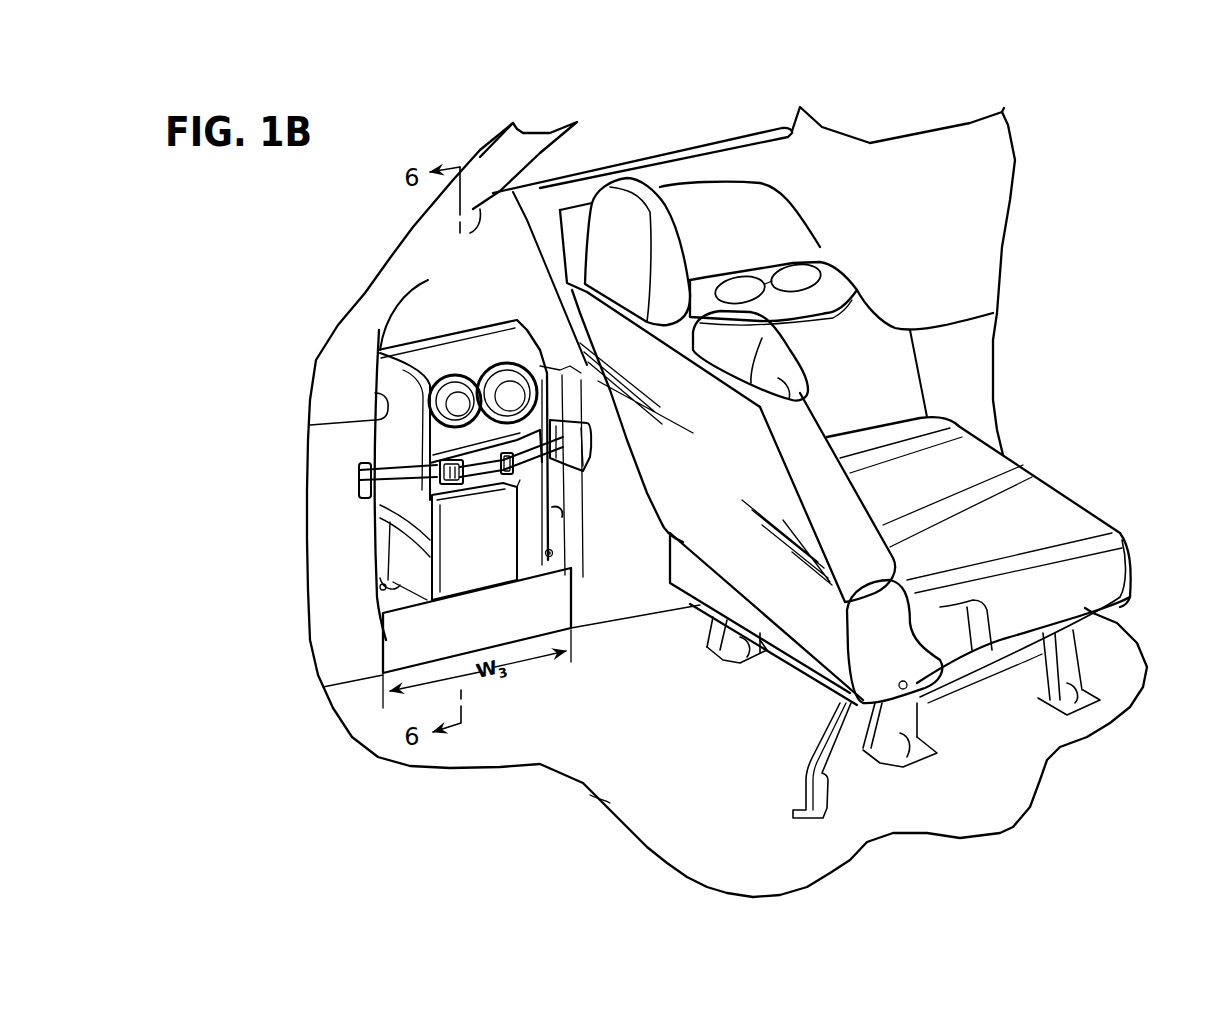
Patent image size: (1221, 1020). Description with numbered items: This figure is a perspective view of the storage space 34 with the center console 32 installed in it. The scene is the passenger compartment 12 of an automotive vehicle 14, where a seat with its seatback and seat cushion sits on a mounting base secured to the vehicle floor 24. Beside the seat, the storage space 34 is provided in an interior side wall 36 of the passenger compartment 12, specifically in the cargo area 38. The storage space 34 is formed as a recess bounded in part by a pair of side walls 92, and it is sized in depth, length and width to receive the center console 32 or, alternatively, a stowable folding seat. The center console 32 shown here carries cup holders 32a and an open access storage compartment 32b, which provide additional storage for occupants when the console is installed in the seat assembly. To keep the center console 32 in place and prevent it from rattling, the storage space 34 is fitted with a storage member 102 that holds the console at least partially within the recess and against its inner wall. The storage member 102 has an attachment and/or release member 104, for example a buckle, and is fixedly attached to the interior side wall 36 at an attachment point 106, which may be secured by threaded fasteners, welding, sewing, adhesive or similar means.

The passenger compartment 12 is at (1034, 298).
The automotive vehicle 14 is at (642, 137).
The vehicle floor 24 is at (734, 854).
The center console 32 is at (466, 350).
The cup holders 32a is at (457, 420).
The open access storage compartment 32b is at (457, 569).
The storage space 34 is at (368, 560).
The interior side wall 36 is at (487, 268).
The cargo area 38 is at (527, 715).
The side walls 92 is at (375, 393).
The storage member 102 is at (386, 473).
The attachment and/or release member 104 is at (464, 482).
The attachment point 106 is at (364, 493).